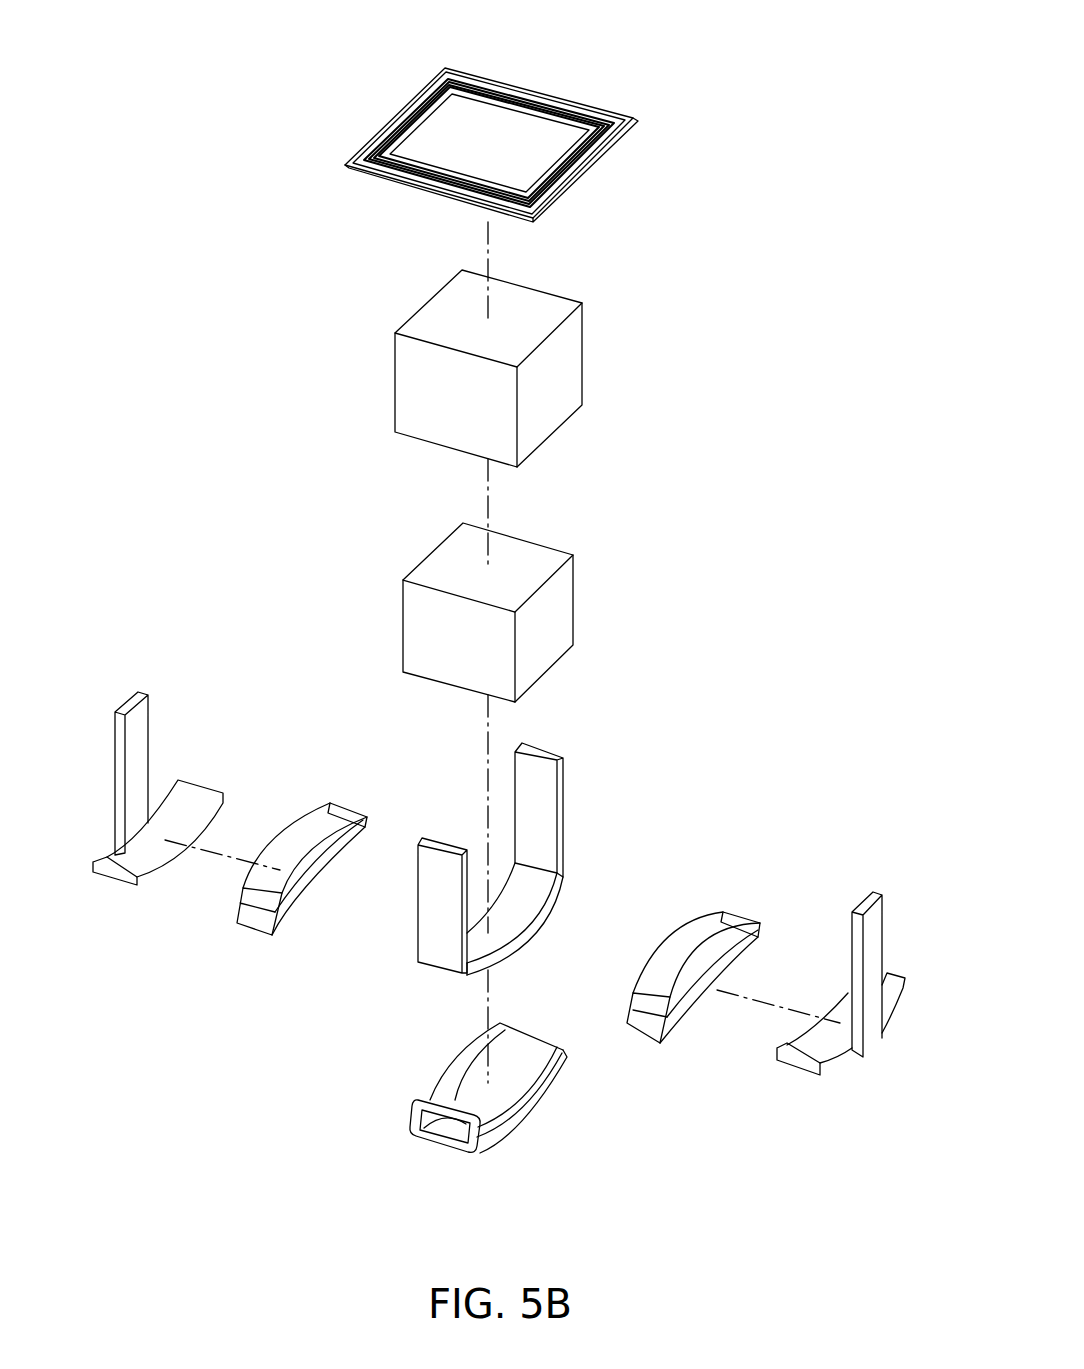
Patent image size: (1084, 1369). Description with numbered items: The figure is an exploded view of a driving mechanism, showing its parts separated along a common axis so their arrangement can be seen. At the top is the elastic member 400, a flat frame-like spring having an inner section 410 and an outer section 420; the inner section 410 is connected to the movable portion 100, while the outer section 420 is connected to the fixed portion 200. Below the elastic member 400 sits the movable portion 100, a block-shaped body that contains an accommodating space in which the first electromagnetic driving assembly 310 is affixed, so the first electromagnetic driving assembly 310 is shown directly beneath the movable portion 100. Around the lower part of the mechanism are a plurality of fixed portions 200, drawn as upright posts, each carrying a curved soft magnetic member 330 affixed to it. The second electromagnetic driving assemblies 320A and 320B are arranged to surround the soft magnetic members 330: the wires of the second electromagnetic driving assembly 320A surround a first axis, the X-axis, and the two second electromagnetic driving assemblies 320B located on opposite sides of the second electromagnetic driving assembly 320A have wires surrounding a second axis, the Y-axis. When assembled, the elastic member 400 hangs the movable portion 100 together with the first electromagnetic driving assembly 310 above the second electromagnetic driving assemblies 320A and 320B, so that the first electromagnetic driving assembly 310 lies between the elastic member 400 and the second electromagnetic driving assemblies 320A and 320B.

The elastic member 400 is at (496, 117).
The inner section 410 is at (490, 118).
The outer section 420 is at (422, 103).
The movable portion 100 is at (570, 355).
The first electromagnetic driving assembly 310 is at (560, 598).
The fixed portion 200 is at (128, 703).
The soft magnetic member 330 is at (197, 802).
The second electromagnetic driving assembly 320A is at (437, 1147).
The second electromagnetic driving assembly 320B is at (250, 930).